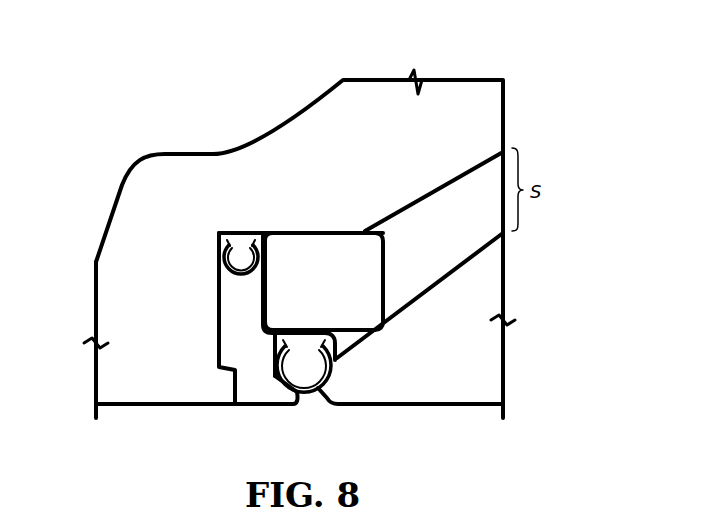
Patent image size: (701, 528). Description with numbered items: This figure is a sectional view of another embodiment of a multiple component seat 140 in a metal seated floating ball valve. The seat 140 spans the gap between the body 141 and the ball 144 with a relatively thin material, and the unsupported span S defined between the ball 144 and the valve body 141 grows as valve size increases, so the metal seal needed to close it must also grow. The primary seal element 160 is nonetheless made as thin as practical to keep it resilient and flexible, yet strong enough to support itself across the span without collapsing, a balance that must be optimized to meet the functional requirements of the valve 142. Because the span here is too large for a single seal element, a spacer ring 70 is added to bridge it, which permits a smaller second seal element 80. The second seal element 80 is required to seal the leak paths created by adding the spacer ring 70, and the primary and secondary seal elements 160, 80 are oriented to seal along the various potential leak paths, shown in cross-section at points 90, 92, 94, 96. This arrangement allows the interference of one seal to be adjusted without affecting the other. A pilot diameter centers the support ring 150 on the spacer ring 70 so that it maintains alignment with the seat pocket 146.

The multiple component seat 140 is at (208, 305).
The body 141 is at (497, 113).
The valve 142 is at (458, 68).
The ball 144 is at (490, 276).
The seat pocket 146 is at (293, 222).
The support ring 150 is at (342, 260).
The second seal element 80 is at (217, 233).
The potential leak path point 94 is at (265, 256).
The potential leak path point 96 is at (220, 255).
The potential leak path point 92 is at (272, 362).
The potential leak path point 90 is at (331, 374).
The primary seal element 160 is at (328, 385).
The spacer ring 70 is at (249, 370).